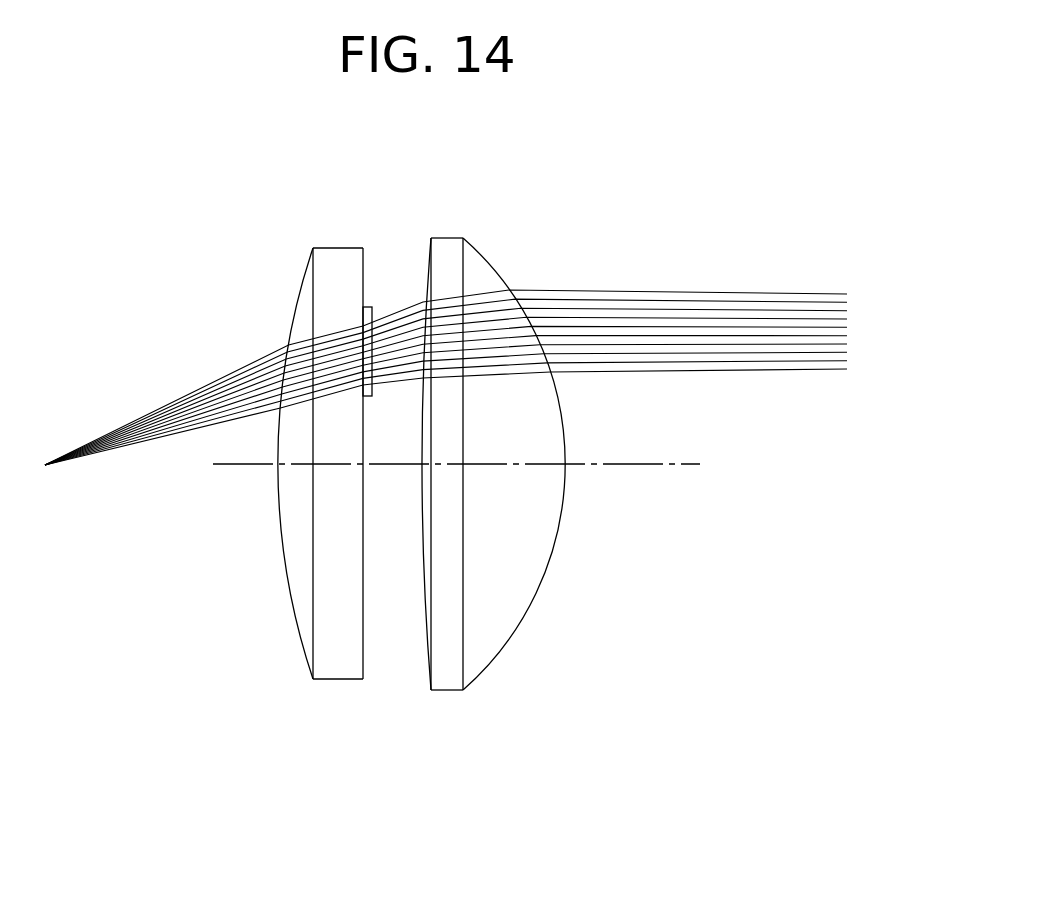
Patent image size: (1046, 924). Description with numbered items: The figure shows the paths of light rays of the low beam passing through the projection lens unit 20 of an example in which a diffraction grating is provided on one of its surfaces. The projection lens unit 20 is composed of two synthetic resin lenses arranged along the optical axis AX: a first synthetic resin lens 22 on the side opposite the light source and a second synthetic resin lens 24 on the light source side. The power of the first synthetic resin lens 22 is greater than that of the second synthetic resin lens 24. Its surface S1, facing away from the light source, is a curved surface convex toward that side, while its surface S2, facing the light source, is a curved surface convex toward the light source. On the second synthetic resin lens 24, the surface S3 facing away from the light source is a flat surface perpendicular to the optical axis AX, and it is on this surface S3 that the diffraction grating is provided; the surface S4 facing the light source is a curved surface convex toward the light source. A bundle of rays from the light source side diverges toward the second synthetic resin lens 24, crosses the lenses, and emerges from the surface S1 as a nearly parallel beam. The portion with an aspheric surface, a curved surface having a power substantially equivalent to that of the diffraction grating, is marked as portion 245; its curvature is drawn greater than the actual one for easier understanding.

The projection lens unit 20 is at (507, 158).
The first synthetic resin lens 22 is at (489, 480).
The second synthetic resin lens 24 is at (321, 455).
The curved surface having a power substantially equivalent to that of the diffractio 245 is at (372, 306).
The lens surface S1 is at (520, 615).
The lens surface S2 is at (422, 588).
The lens surface S3 is at (365, 648).
The lens surface S4 is at (302, 648).
The optical axis AX is at (478, 466).